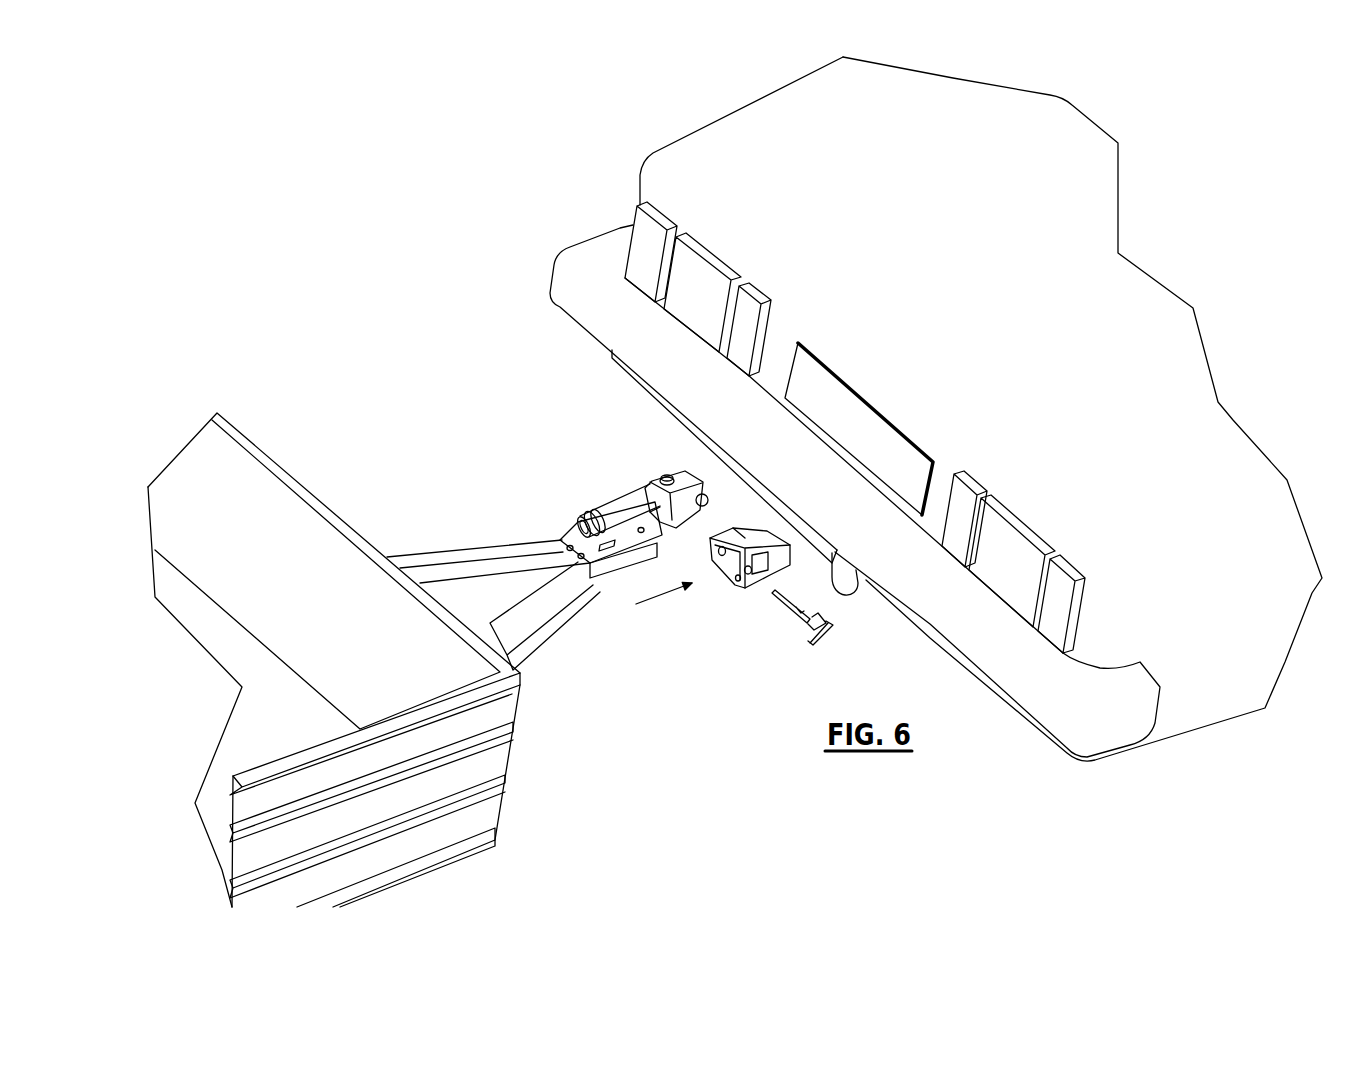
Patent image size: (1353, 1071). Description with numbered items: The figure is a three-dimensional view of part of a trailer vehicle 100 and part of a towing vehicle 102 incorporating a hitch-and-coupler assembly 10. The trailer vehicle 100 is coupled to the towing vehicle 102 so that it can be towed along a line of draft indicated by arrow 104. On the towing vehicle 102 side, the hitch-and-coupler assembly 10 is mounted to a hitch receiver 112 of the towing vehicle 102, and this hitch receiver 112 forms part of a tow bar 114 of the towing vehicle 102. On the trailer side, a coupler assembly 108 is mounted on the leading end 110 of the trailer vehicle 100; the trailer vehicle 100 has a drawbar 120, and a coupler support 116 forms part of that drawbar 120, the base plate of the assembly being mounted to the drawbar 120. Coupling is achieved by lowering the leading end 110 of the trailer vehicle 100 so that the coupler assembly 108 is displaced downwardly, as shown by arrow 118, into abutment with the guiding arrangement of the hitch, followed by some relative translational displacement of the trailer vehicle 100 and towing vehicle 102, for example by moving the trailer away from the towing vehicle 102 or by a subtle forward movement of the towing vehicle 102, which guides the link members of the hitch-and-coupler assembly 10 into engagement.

The hitch-and-coupler assembly 10 is at (611, 477).
The trailer vehicle 100 is at (228, 462).
The towing vehicle 102 is at (678, 147).
The arrow indicating line of draft 104 is at (667, 593).
The coupler assembly 108 is at (577, 512).
The leading end of the trailer vehicle 110 is at (625, 577).
The hitch receiver 112 is at (813, 542).
The tow bar 114 is at (857, 587).
The coupler support 116 is at (593, 573).
The arrow indicating downward displacement 118 is at (725, 530).
The drawbar 120 is at (442, 557).